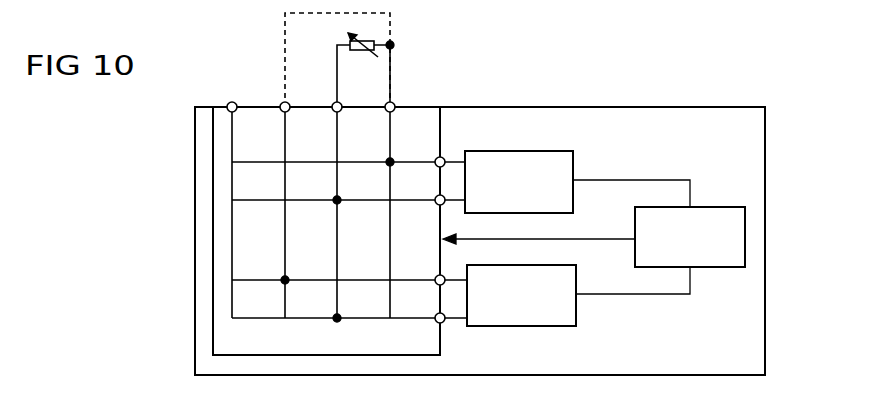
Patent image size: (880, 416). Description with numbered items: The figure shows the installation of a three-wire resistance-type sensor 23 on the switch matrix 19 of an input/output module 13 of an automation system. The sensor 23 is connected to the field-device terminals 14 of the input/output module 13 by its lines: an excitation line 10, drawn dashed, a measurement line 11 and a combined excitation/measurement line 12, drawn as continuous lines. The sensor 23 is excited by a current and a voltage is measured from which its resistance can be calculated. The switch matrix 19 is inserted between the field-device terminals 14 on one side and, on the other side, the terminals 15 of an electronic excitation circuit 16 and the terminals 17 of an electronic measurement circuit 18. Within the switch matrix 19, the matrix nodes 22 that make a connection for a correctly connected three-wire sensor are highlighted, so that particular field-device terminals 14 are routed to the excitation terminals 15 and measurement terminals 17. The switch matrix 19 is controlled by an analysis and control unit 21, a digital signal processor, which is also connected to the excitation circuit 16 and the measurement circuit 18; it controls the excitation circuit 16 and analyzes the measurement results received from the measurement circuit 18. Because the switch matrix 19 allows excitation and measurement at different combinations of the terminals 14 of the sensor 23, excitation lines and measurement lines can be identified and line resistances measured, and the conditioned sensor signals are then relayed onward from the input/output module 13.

The excitation lines 10 is at (285, 37).
The measurement lines 11 is at (390, 78).
The combined excitation/measurement lines 12 is at (337, 75).
The input/output module 13 is at (612, 106).
The field-device terminals 14 is at (390, 112).
The terminals of the electronic excitation circuit 15 is at (440, 323).
The electronic excitation circuit 16 is at (525, 326).
The terminals of the electronic measurement circuit 17 is at (440, 195).
The electronic measurement circuit 18 is at (528, 150).
The switch matrix 19 is at (213, 235).
The analysis and control unit 21 is at (708, 207).
The matrix nodes 22 is at (390, 166).
The resistance-type sensor 23 is at (365, 40).